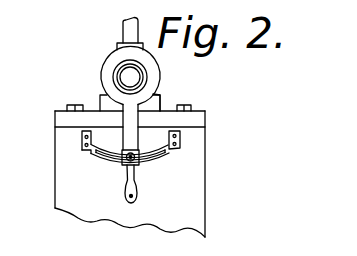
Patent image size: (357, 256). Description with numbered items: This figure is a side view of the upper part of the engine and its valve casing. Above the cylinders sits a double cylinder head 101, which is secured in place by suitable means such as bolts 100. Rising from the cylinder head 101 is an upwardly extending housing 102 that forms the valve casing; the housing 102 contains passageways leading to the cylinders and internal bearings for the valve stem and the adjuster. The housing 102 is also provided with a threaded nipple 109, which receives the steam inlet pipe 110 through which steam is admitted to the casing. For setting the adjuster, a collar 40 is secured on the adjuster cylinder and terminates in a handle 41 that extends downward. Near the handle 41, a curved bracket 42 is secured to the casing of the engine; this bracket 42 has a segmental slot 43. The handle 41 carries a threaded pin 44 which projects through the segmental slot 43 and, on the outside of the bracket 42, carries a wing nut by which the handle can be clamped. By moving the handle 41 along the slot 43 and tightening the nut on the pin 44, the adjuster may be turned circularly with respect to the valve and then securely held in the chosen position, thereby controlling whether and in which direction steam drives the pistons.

The steam inlet pipe 110 is at (123, 29).
The threaded nipple 109 is at (117, 48).
The collar 40 is at (113, 75).
The handle 41 is at (128, 110).
The housing 102 is at (158, 105).
The bolts 100 is at (192, 107).
The double cylinder head 101 is at (205, 123).
The curved bracket 42 is at (87, 151).
The segmental slot 43 is at (108, 155).
The threaded pin 44 is at (142, 162).